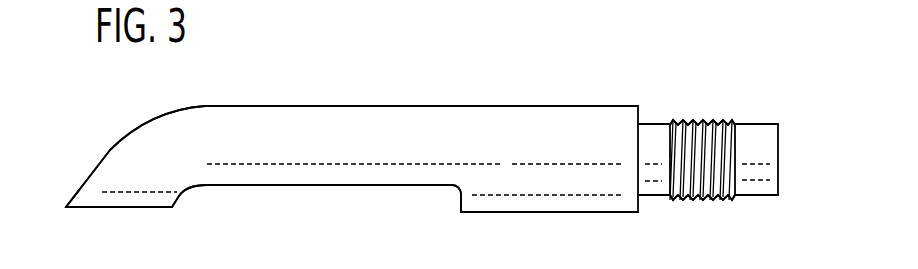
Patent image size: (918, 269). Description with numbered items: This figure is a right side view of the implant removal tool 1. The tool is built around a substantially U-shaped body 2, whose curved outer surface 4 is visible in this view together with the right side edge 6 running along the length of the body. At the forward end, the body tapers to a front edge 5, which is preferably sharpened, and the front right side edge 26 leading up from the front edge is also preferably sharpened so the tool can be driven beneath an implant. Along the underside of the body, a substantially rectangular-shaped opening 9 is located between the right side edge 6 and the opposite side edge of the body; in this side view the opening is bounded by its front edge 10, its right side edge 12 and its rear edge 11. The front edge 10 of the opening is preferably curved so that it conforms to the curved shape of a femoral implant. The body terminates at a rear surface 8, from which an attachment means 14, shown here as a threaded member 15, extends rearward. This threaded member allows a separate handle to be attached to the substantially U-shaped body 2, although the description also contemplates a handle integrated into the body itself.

The implant removal tool 1 is at (588, 72).
The substantially U-shaped body 2 is at (203, 105).
The curved outer surface 4 is at (130, 184).
The front edge 5 is at (70, 197).
The right side edge 6 is at (432, 107).
The rear surface 8 is at (641, 107).
The substantially rectangular-shaped opening 9 is at (333, 185).
The front edge of the rectangular-shaped opening 10 is at (173, 205).
The rear edge of the rectangular-shaped opening 11 is at (460, 204).
The right side edge of the rectangular-shaped opening 12 is at (272, 185).
The attachment means 14 is at (707, 199).
The threaded member 15 is at (702, 160).
The front right side edge 26 is at (117, 142).